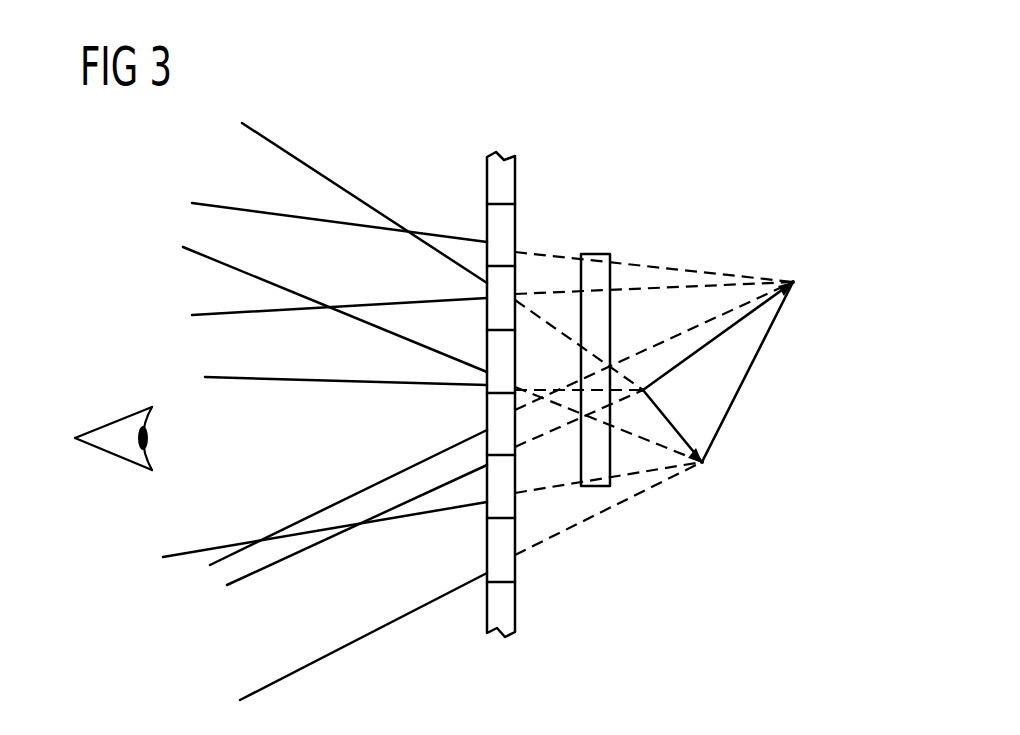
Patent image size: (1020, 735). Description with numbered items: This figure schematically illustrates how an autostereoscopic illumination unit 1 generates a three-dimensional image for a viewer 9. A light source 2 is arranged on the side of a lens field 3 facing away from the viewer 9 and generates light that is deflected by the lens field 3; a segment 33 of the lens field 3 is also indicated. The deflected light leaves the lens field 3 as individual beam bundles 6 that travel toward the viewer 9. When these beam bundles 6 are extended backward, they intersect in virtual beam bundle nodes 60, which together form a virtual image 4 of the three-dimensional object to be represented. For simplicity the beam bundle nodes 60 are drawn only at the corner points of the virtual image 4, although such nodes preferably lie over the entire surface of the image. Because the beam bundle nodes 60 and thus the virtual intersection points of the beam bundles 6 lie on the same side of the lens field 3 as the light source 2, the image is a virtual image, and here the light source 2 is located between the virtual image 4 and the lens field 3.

The illumination unit 1 is at (625, 108).
The light source 2 is at (597, 256).
The lens field 3 is at (537, 397).
The pixel of display panel 33 is at (505, 611).
The virtual image 4 is at (755, 363).
The beam bundles 6 is at (322, 173).
The viewer 9 is at (113, 457).
The beam bundle nodes 60 is at (800, 287).